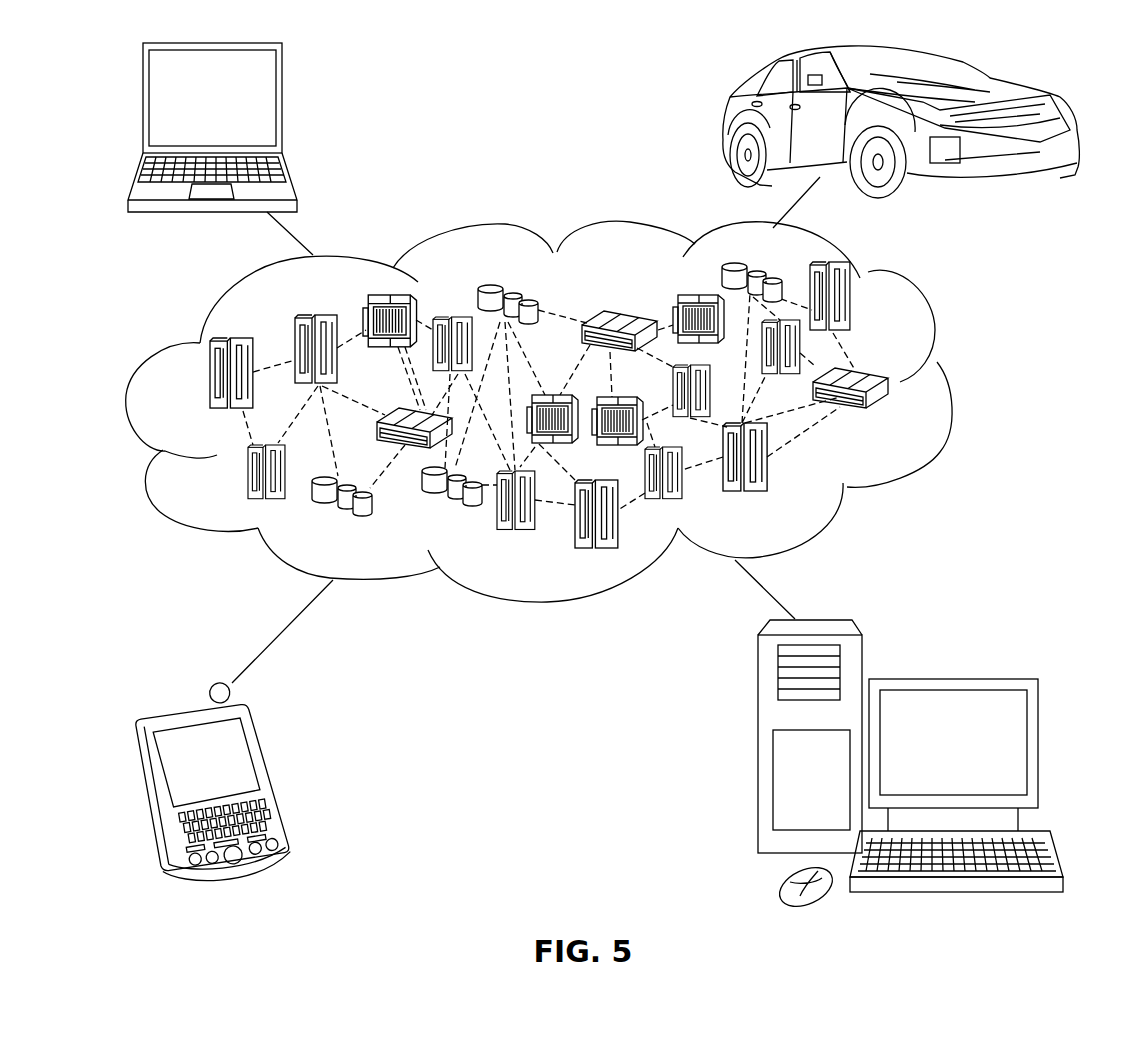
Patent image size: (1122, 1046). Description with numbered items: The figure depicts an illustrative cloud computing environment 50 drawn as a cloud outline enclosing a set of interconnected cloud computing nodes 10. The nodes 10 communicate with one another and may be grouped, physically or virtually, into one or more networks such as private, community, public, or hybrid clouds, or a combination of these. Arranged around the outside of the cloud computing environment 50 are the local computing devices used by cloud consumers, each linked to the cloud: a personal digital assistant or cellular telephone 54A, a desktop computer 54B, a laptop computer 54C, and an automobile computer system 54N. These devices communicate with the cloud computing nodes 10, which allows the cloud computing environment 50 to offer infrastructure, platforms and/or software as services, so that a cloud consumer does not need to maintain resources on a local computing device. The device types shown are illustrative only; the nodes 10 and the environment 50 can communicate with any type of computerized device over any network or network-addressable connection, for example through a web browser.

The cloud computing node 10 is at (893, 418).
The cloud computing environment 50 is at (952, 383).
The personal digital assistant or cellular telephone 54A is at (272, 775).
The desktop computer 54B is at (952, 678).
The laptop computer 54C is at (283, 107).
The automobile computer system 54N is at (728, 120).